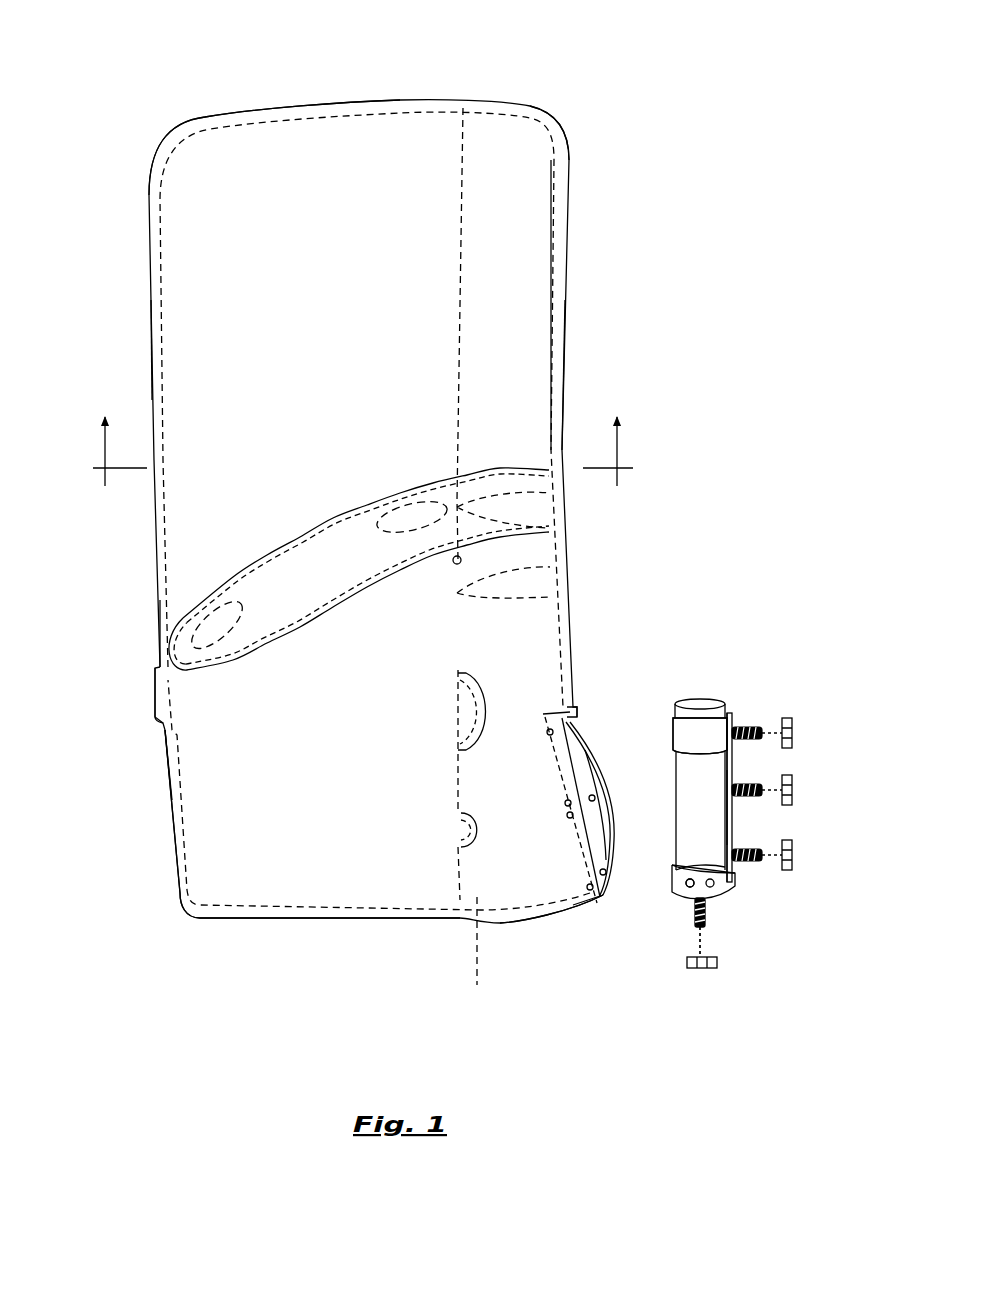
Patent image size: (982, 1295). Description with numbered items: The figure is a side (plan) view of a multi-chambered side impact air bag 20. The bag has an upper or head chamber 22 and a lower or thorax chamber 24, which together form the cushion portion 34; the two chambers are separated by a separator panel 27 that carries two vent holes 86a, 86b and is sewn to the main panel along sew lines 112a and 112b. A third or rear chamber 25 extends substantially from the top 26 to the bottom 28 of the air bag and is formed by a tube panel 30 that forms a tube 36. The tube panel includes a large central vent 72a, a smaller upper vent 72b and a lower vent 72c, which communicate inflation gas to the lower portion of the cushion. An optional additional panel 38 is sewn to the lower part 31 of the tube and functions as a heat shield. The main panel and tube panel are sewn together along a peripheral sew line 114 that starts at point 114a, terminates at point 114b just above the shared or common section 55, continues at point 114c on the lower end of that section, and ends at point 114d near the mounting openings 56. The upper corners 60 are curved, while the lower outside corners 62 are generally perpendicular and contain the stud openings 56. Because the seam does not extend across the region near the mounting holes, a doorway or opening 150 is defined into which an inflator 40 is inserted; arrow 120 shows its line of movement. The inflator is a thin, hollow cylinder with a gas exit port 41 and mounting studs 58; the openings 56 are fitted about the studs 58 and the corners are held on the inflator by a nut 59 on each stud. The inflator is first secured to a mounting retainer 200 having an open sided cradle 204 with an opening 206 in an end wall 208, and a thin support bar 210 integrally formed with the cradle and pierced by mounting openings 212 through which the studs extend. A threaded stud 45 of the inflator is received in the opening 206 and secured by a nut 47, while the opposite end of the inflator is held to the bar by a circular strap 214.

The multi-chambered air bag 20 is at (190, 107).
The upper or head chamber 22 is at (363, 175).
The lower or thorax chamber 24 is at (227, 813).
The third or rear chamber 25 is at (510, 383).
The top 26 is at (348, 100).
The separator panel 27 is at (287, 563).
The bottom 28 is at (265, 917).
The tube panel 30 is at (458, 298).
The lower part of the tube 31 is at (473, 841).
The cushion or cushion portion 34 is at (190, 343).
The tube 36 is at (504, 874).
The additional panel 38 is at (510, 598).
The inflator 40 is at (703, 778).
The gas exit port 41 is at (690, 887).
The threaded stud 45 is at (702, 968).
The nut 47 is at (697, 968).
The shared or common section 55 is at (172, 703).
The openings 56 is at (546, 723).
The studs 58 is at (747, 723).
The nut 59 is at (785, 717).
The curved corners 60 is at (163, 152).
The lower outside corners 62 is at (573, 857).
The large central vent 72a is at (462, 708).
The upper vent 72b is at (452, 562).
The lower vent 72c is at (458, 830).
The vent hole 86a is at (222, 612).
The vent hole 86b is at (415, 517).
The sew line 112a is at (300, 612).
The sew line 112b is at (347, 508).
The peripheral sew line 114 is at (555, 255).
The starting point of peripheral sew line 114a is at (577, 710).
The terminating point of peripheral sew line 114b is at (157, 660).
The continuation point of peripheral sew line 114c is at (160, 735).
The end point of peripheral sew line 114d is at (585, 908).
The arrow 120 is at (665, 777).
The doorway or opening 150 is at (583, 767).
The mounting retainer 200 is at (730, 880).
The open sided cradle 204 is at (720, 887).
The opening 206 is at (690, 890).
The end wall 208 is at (708, 893).
The support bar 210 is at (732, 825).
The mounting openings 212 is at (732, 777).
The circular strap 214 is at (708, 733).